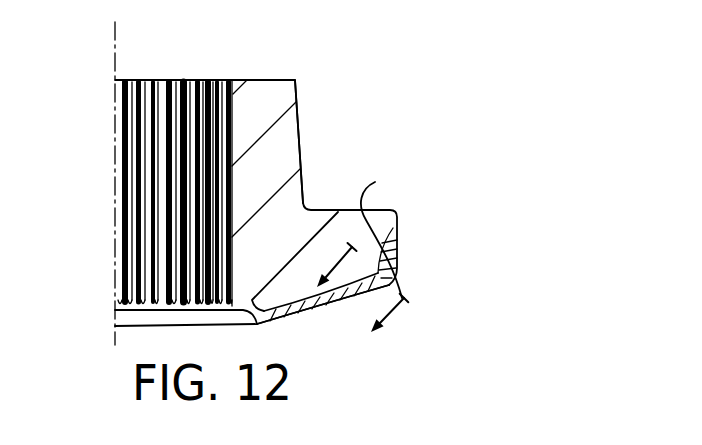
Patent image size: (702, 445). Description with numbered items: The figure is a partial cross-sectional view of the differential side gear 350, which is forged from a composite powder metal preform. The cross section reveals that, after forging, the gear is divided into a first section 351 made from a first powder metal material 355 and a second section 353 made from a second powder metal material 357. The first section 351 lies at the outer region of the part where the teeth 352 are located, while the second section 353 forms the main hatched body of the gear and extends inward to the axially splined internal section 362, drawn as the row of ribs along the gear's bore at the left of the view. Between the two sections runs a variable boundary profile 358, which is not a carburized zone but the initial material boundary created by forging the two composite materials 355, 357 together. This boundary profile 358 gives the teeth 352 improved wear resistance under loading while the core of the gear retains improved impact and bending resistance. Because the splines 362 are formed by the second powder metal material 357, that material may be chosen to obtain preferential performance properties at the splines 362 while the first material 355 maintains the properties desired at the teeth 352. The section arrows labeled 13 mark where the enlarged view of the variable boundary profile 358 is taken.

The differential side gear 350 is at (322, 68).
The second section 353 is at (314, 128).
The second powder metal material 357 is at (274, 168).
The variable boundary profile 358 is at (393, 232).
The teeth 352 is at (418, 261).
The first powder metal material 355 is at (353, 292).
The first section 351 is at (320, 328).
The section line for FIG. 13 is at (351, 298).
The axially splined internal section 362 is at (134, 287).